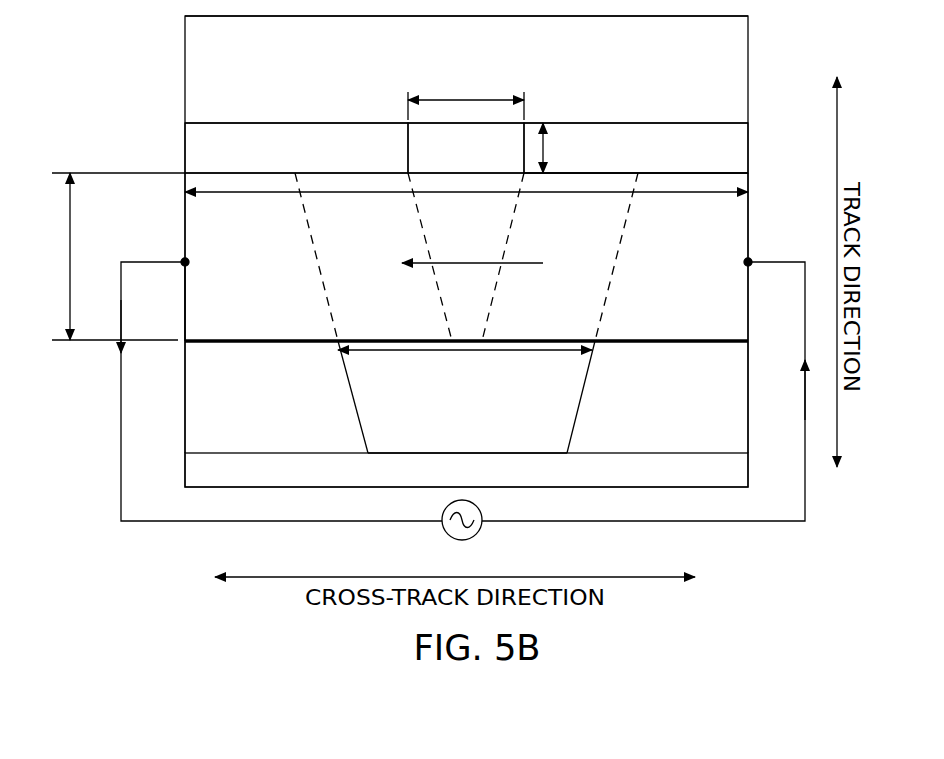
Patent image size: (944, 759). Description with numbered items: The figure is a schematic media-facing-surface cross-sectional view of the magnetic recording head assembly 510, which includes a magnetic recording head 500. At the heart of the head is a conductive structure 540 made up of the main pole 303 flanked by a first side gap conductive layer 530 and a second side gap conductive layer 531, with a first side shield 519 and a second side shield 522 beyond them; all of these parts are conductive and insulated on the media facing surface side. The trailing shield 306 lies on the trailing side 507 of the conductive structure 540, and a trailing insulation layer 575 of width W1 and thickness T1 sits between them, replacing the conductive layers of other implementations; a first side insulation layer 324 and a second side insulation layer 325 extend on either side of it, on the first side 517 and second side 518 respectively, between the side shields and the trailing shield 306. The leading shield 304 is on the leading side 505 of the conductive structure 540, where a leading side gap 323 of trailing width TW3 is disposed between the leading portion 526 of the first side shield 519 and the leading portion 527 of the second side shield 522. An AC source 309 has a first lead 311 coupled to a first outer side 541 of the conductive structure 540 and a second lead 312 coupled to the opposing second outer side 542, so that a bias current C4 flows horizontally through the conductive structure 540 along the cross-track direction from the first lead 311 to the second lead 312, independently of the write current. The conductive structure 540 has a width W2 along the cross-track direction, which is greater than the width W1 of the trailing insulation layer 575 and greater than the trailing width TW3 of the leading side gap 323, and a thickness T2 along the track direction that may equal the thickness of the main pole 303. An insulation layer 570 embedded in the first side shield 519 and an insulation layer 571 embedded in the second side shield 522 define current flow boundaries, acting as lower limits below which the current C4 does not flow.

The magnetic recording head 500 is at (175, 135).
The magnetic recording head assembly 510 is at (130, 50).
The trailing shield 306 is at (417, 56).
The trailing side 507 is at (629, 162).
The second side insulation layer 325 is at (230, 157).
The trailing insulation layer 575 is at (445, 157).
The first side insulation layer 324 is at (680, 157).
The width W1 is at (445, 100).
The thickness T1 is at (545, 148).
The second outer side 542 is at (185, 205).
The first outer side 541 is at (749, 205).
The width W2 is at (278, 192).
The second side 518 is at (178, 246).
The first side 517 is at (757, 247).
The second side gap conductive layer 531 is at (345, 236).
The main pole 303 is at (445, 233).
The first side gap conductive layer 530 is at (545, 233).
The current C4 is at (543, 265).
The thickness T2 is at (106, 256).
The second side shield 522 is at (230, 301).
The first side shield 519 is at (665, 279).
The conductive structure 540 is at (215, 305).
The leading portion 527 is at (230, 383).
The leading portion 526 is at (665, 389).
The insulation layer 571 is at (330, 346).
The insulation layer 570 is at (630, 346).
The leading side gap 323 is at (445, 408).
The leading side 505 is at (438, 370).
The trailing width TW3 is at (520, 351).
The leading shield 304 is at (575, 481).
The second lead 312 is at (185, 263).
The first lead 311 is at (748, 263).
The AC source 309 is at (446, 532).